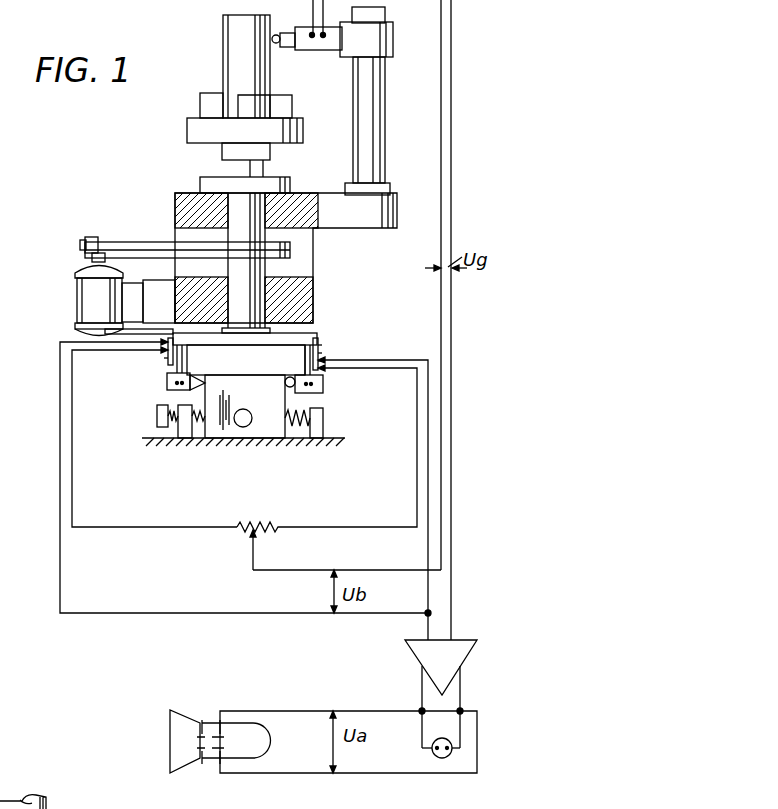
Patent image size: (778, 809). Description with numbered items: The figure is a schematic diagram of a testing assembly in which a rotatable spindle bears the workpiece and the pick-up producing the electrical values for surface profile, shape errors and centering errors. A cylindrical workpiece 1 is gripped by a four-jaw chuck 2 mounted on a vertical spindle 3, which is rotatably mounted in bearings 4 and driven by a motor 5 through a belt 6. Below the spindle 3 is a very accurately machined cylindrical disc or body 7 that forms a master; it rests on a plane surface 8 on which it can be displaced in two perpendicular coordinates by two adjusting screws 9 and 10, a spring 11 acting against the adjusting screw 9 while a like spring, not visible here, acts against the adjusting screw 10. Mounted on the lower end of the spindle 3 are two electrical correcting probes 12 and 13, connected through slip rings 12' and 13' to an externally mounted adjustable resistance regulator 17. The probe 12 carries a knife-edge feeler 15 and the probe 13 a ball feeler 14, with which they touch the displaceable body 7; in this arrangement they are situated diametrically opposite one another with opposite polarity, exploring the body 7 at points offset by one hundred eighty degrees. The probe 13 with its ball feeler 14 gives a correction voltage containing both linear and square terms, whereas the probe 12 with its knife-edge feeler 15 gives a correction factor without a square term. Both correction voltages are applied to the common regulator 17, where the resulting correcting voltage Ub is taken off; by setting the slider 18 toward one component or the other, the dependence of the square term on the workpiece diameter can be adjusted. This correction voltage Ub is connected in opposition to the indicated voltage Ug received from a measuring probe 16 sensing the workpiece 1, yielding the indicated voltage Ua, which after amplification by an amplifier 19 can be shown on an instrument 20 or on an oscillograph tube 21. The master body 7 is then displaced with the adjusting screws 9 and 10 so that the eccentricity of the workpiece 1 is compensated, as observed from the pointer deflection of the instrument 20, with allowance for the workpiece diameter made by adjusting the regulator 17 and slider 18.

The cylindrical workpiece 1 is at (230, 47).
The four-jaw chuck 2 is at (213, 100).
The vertical spindle 3 is at (240, 163).
The bearings 4 is at (297, 217).
The motor 5 is at (90, 292).
The belt 6 is at (143, 248).
The disc or body (master) 7 is at (218, 422).
The plane surface 8 is at (313, 443).
The adjusting screw 9 is at (157, 417).
The adjusting screw 10 is at (246, 424).
The spring 11 is at (290, 410).
The electrical correcting probe 12 is at (156, 376).
The slip ring 12' is at (149, 360).
The electrical correcting probe 13 is at (327, 372).
The slip ring 13' is at (338, 349).
The ball feeler 14 is at (288, 377).
The knife-edge feeler 15 is at (198, 382).
The measuring probe 16 is at (303, 42).
The adjustable resistance regulator 17 is at (251, 522).
The slider 18 is at (252, 557).
The amplifier 19 is at (468, 645).
The instrument 20 is at (441, 758).
The oscillograph tube 21 is at (180, 727).